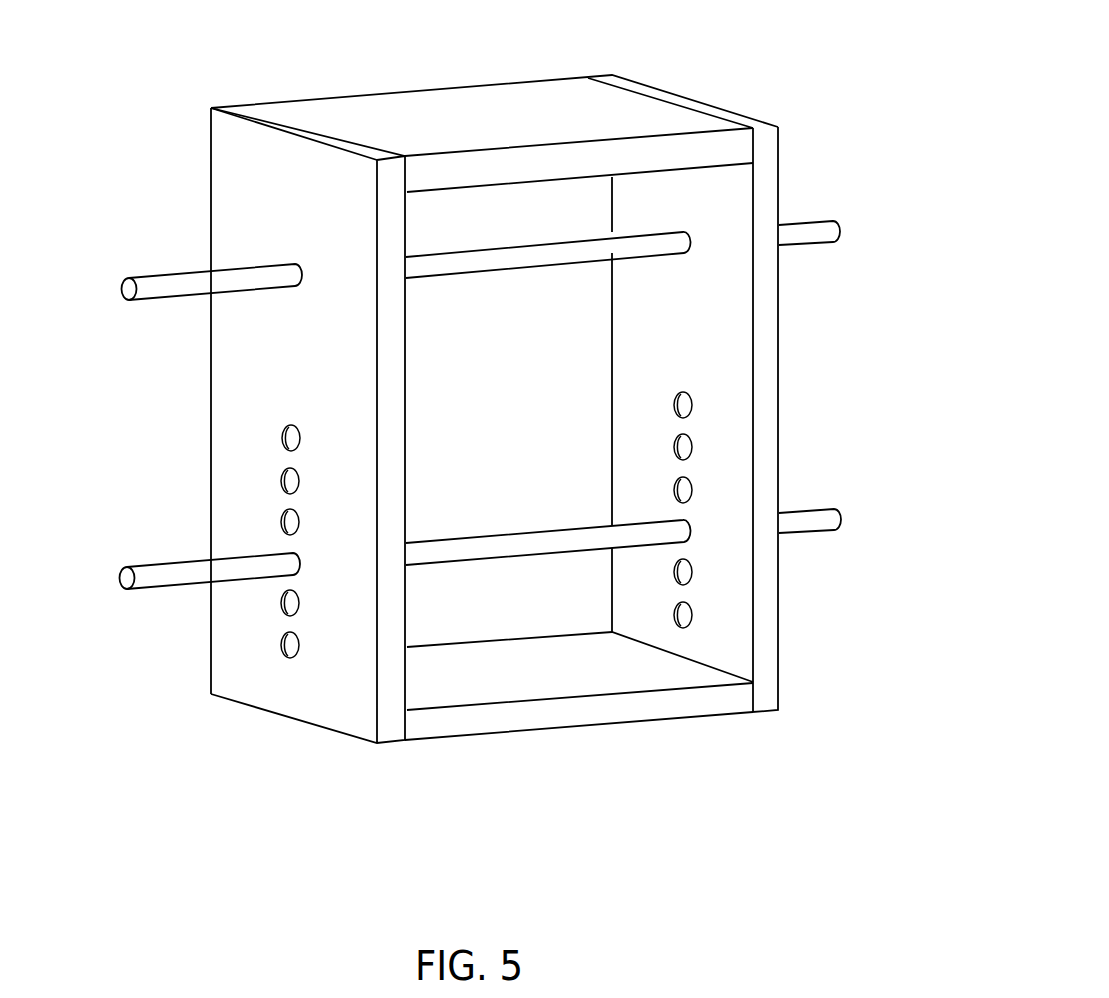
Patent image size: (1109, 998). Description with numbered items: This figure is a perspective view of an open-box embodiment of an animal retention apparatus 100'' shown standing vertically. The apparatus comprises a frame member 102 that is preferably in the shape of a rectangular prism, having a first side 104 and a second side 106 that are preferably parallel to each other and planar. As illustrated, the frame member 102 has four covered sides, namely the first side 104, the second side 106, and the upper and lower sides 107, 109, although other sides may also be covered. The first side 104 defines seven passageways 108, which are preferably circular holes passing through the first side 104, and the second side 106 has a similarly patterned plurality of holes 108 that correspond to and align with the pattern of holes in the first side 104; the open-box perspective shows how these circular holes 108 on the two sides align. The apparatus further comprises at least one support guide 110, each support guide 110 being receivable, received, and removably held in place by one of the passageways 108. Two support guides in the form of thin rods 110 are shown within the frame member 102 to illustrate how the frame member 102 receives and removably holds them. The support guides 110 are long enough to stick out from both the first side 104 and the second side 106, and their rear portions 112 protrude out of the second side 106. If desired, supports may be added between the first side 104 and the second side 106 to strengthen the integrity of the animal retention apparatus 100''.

The animal retention apparatus 100'' is at (503, 421).
The frame member 102 is at (358, 726).
The first side 104 is at (290, 174).
The second side 106 is at (733, 647).
The upper side 107 is at (481, 113).
The passageways 108 is at (282, 440).
The lower side 109 is at (578, 717).
The support guides 110 is at (143, 285).
The rear portions 112 is at (870, 377).